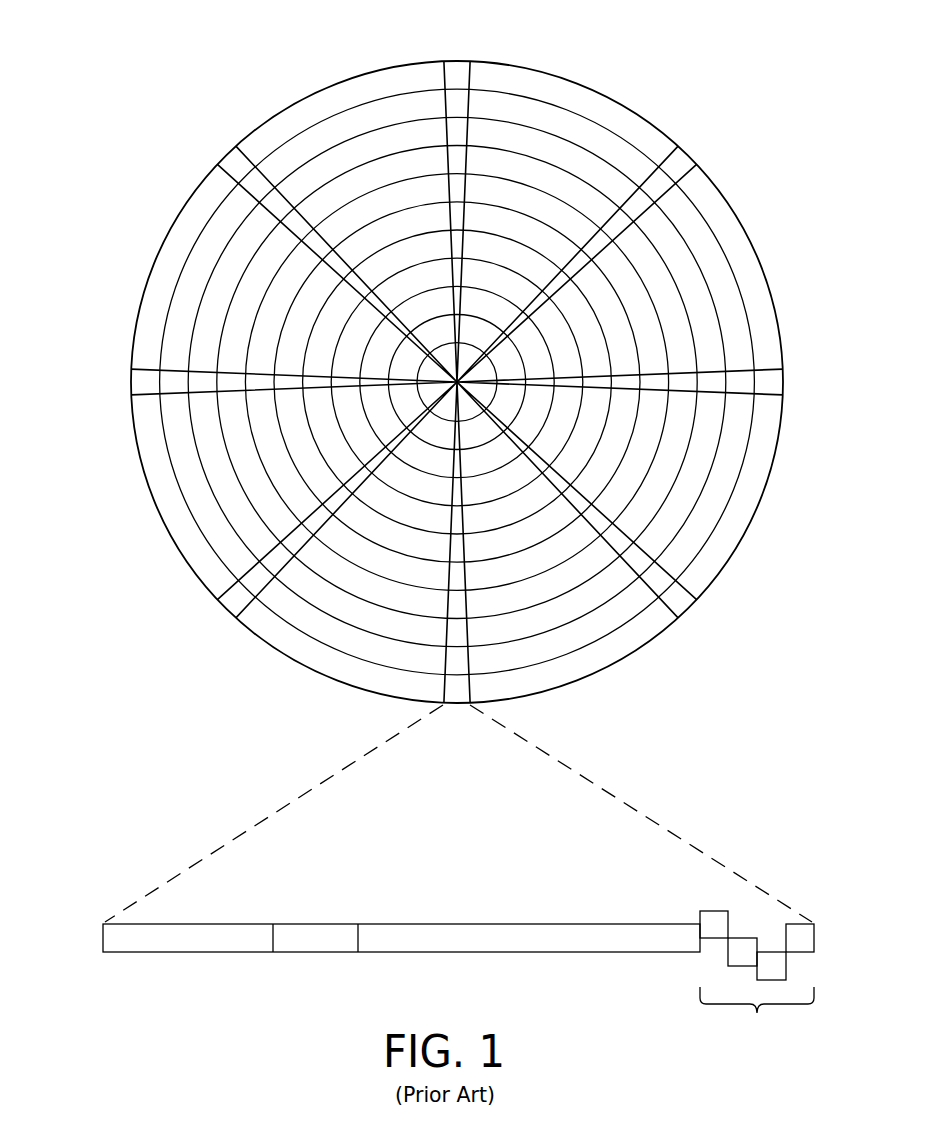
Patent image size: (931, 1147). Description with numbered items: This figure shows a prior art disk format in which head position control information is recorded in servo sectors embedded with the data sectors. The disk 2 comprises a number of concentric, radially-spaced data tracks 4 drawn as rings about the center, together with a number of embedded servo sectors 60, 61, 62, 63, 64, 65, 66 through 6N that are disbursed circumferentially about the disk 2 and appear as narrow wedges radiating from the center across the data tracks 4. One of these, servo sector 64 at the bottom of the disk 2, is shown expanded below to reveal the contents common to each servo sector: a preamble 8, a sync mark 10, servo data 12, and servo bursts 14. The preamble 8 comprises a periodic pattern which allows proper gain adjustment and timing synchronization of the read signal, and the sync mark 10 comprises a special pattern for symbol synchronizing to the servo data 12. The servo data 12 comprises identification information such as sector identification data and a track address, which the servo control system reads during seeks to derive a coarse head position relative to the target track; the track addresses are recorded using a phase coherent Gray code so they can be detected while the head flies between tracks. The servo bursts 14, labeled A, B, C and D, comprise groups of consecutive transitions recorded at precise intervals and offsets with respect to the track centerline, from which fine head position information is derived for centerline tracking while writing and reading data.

The disk 2 is at (210, 62).
The data tracks 4 is at (590, 108).
The servo sector 60 is at (457, 72).
The servo sector 61 is at (682, 163).
The servo sector 62 is at (778, 383).
The servo sector 63 is at (680, 603).
The servo sector 64 is at (311, 774).
The servo sector 65 is at (230, 605).
The servo sector 66 is at (136, 380).
The servo sector 6N is at (232, 162).
The preamble 8 is at (170, 954).
The sync mark 10 is at (314, 954).
The servo data 12 is at (516, 954).
The servo bursts 14 is at (680, 888).